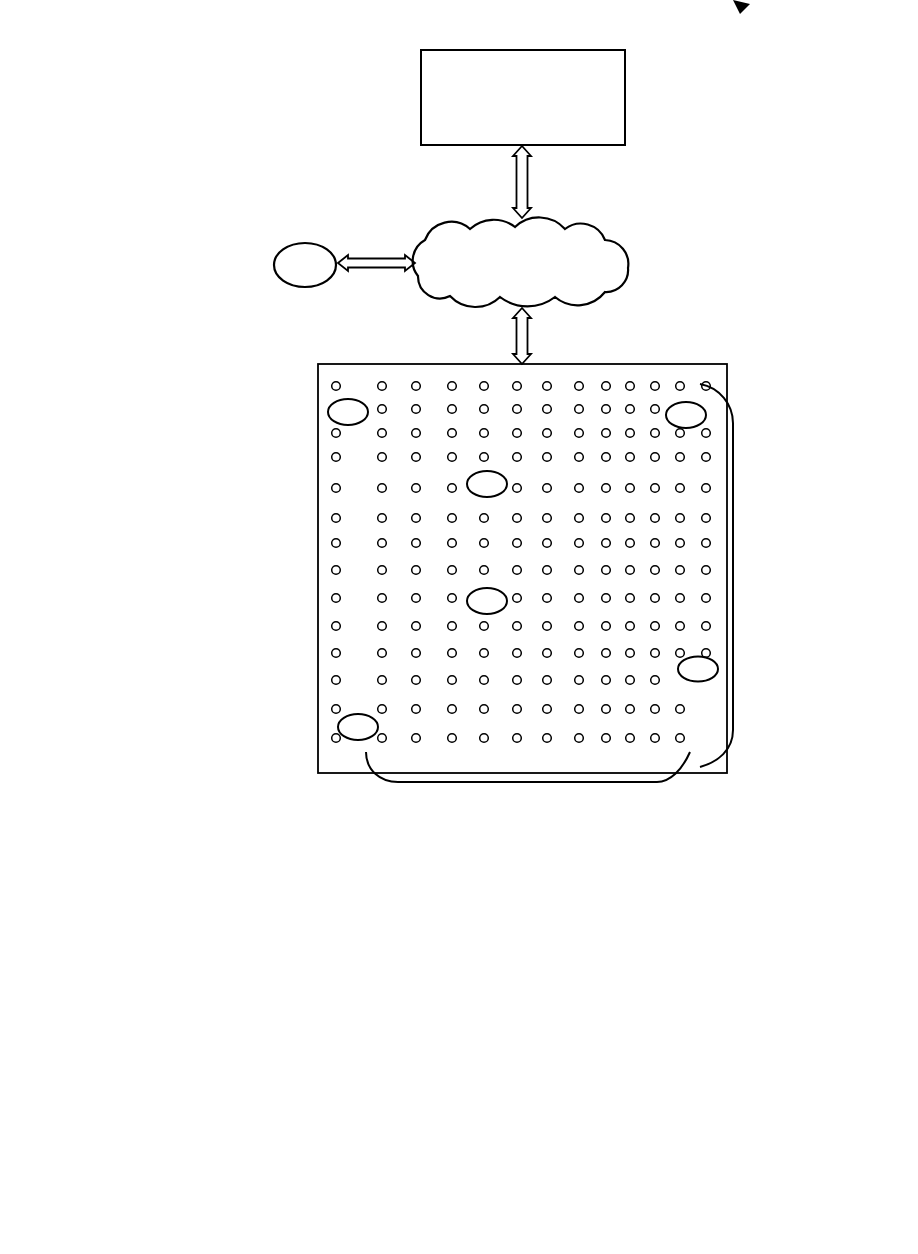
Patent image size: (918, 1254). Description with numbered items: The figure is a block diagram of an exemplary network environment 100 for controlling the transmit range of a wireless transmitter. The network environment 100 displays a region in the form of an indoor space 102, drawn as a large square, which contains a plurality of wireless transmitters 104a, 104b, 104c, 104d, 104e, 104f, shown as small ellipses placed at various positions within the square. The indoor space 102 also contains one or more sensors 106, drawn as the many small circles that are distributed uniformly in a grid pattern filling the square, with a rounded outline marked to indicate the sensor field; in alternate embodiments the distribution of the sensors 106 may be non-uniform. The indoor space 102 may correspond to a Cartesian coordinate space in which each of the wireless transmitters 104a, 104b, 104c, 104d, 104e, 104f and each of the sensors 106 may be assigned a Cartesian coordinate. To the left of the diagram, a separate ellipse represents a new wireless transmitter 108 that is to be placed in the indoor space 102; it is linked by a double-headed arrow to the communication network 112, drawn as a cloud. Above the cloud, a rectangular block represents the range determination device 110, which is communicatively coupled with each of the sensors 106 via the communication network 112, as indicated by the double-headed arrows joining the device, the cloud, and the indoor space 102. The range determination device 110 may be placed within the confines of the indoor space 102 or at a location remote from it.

The network environment 100 is at (422, 640).
The indoor space 102 is at (607, 364).
The wireless transmitter 104a is at (330, 418).
The wireless transmitter 104b is at (340, 727).
The wireless transmitter 104c is at (697, 682).
The wireless transmitter 104d is at (684, 402).
The wireless transmitter 104e is at (468, 486).
The wireless transmitter 104f is at (468, 598).
The sensors 106 is at (733, 573).
The new wireless transmitter 108 is at (278, 255).
The range determination device 110 is at (577, 137).
The communication network 112 is at (583, 289).